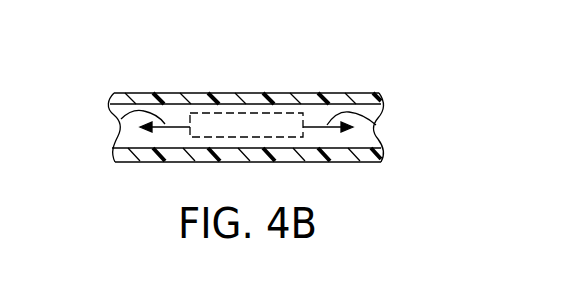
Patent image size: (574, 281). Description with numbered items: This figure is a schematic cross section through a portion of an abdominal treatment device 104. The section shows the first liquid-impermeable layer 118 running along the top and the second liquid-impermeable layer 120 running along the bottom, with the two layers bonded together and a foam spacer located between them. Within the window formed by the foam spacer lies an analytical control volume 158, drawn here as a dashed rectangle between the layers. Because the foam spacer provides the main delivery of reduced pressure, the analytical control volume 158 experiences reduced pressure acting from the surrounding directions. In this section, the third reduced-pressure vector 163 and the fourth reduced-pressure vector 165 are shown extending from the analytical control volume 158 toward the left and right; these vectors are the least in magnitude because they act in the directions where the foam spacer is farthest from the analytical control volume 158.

The abdominal treatment device 104 is at (336, 93).
The first liquid-impermeable layer 118 is at (143, 99).
The second liquid-impermeable layer 120 is at (145, 152).
The analytical control volume 158 is at (262, 93).
The third reduced-pressure vector 163 is at (113, 122).
The fourth reduced-pressure vector 165 is at (377, 124).